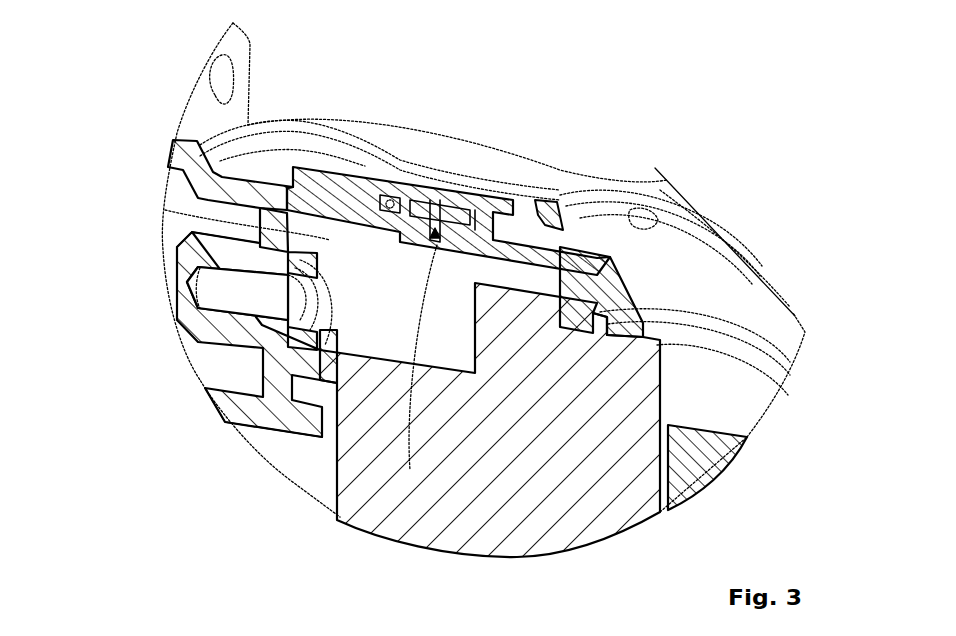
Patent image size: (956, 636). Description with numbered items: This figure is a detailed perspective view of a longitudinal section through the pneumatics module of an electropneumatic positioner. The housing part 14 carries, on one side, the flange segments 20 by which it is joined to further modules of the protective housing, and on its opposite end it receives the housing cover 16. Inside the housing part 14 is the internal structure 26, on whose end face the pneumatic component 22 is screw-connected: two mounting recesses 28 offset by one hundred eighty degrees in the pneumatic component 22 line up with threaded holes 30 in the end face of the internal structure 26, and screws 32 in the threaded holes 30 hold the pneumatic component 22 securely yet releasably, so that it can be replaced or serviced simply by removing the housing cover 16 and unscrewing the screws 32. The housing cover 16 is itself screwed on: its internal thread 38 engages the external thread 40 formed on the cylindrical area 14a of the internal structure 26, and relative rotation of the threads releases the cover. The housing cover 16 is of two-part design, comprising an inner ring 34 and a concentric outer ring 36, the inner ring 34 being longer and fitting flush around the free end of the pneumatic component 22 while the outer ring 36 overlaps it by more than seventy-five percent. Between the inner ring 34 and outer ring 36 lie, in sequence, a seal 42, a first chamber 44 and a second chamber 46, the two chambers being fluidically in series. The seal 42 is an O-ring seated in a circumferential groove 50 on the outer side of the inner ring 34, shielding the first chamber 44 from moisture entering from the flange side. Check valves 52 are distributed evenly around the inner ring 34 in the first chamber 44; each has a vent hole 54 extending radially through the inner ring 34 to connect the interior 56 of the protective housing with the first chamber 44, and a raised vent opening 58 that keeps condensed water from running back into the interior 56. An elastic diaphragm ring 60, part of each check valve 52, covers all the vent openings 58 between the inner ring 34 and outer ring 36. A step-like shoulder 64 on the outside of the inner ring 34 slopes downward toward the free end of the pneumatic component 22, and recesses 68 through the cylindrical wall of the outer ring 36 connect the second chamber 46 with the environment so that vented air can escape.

The housing part 14 is at (303, 131).
The cylindrical area 14a is at (430, 212).
The housing cover 16 is at (643, 204).
The flange segments 20 is at (247, 52).
The pneumatic component 22 is at (497, 500).
The internal structure 26 is at (197, 247).
The mounting recesses 28 is at (293, 400).
The threaded holes 30 is at (243, 297).
The screws 32 is at (197, 342).
The inner ring 34 is at (783, 327).
The outer ring 36 is at (706, 230).
The internal thread 38 is at (318, 240).
The external thread 40 is at (265, 225).
The seal 42 is at (388, 215).
The first chamber 44 is at (530, 200).
The second chamber 46 is at (635, 188).
The circumferential groove 50 is at (420, 208).
The check valves 52 is at (340, 518).
The vent hole 54 is at (437, 245).
The interior 56 is at (600, 292).
The vent opening 58 is at (478, 212).
The diaphragm ring 60 is at (470, 205).
The step-like shoulder 64 is at (560, 330).
The recesses 68 is at (585, 195).